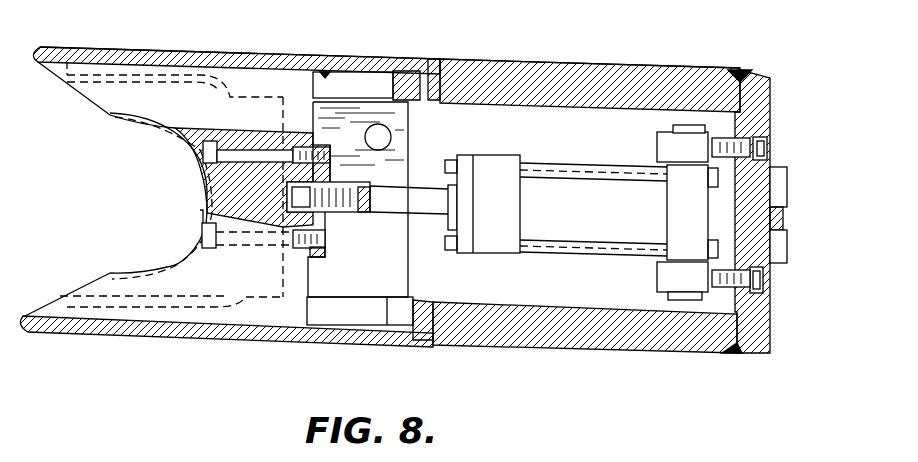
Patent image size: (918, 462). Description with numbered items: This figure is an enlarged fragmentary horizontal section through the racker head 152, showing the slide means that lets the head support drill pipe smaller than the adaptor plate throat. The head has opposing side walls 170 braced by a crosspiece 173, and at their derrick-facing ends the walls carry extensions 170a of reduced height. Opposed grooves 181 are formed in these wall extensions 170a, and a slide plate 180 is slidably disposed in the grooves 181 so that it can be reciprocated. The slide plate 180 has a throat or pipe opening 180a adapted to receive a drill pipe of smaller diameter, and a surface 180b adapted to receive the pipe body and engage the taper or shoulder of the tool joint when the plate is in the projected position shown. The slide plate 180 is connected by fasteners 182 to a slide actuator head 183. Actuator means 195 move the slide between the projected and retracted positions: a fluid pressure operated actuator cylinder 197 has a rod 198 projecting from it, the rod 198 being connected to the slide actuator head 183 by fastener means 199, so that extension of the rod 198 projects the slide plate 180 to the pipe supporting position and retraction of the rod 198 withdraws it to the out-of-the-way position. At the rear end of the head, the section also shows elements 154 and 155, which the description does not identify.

The racker head 152 is at (466, 58).
The end cap 154 is at (773, 86).
The nut 155 is at (784, 225).
The side walls 170 is at (553, 62).
The wall extensions 170a is at (248, 42).
The crosspiece 173 is at (393, 268).
The slide plate 180 is at (227, 192).
The throat or pipe opening 180a is at (201, 175).
The surface 180b is at (163, 263).
The grooves 181 is at (327, 72).
The fasteners 182 is at (257, 150).
The slide actuator head 183 is at (327, 166).
The actuator means 195 is at (588, 256).
The actuator cylinder 197 is at (645, 208).
The rod 198 is at (423, 183).
The fastener means 199 is at (346, 208).